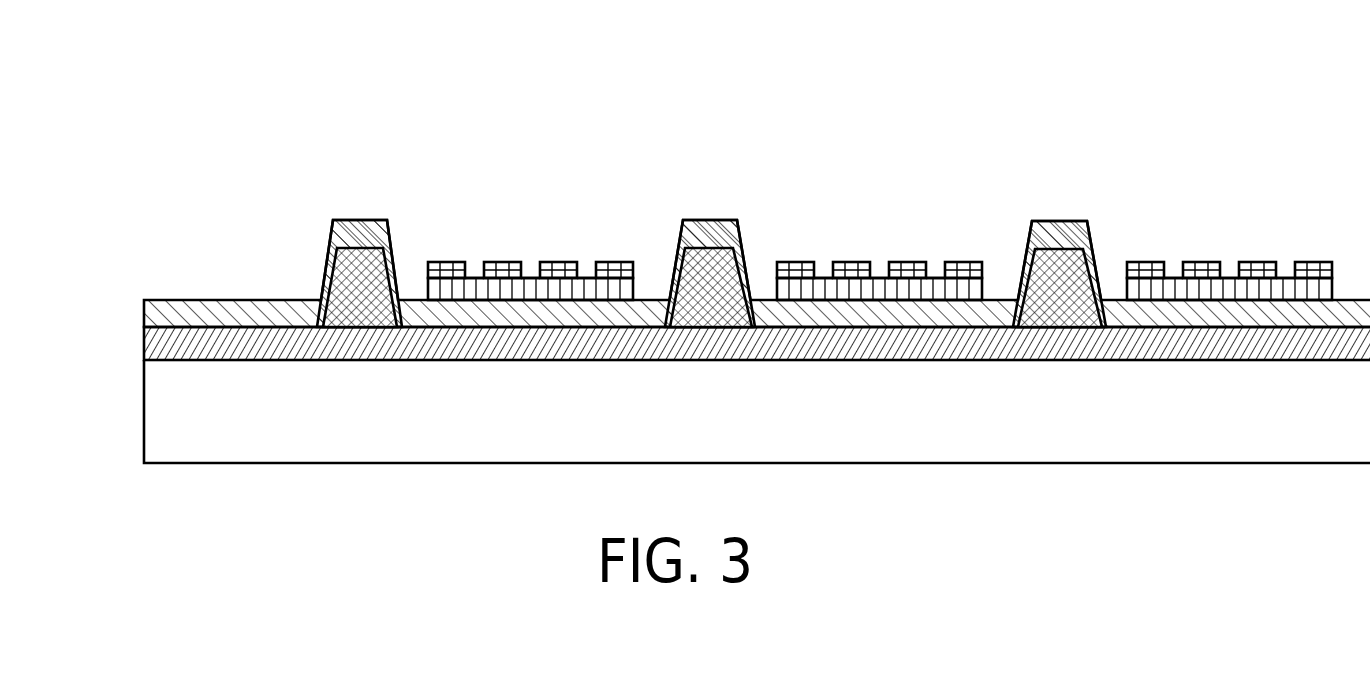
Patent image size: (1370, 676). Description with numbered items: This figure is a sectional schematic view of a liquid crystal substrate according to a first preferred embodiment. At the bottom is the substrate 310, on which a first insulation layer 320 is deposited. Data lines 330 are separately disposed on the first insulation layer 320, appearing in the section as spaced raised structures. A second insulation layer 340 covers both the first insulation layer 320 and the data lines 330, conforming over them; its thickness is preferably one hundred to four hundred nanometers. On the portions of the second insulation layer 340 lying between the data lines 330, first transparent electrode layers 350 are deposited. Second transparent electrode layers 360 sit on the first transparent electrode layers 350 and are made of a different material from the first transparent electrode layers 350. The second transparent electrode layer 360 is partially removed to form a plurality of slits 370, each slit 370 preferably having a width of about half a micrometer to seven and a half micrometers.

The substrate 310 is at (143, 420).
The first insulation layer 320 is at (143, 345).
The data lines 330 is at (360, 248).
The second insulation layer 340 is at (167, 100).
The first transparent electrode layer 350 is at (633, 287).
The second transparent electrode layer 360 is at (452, 261).
The slits 370 is at (588, 277).